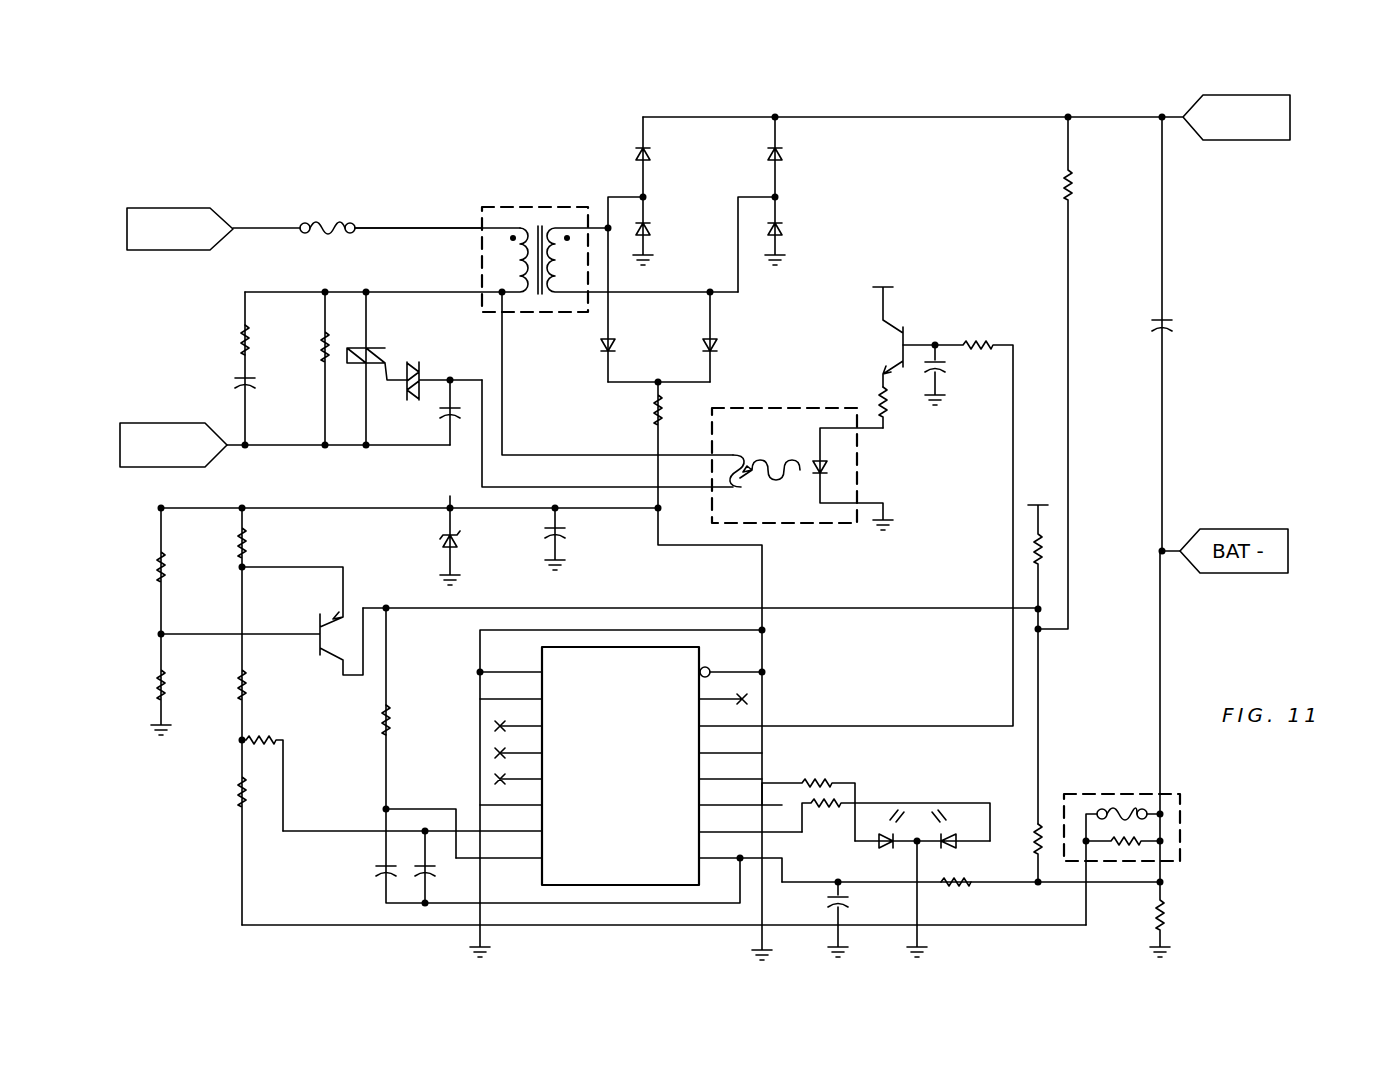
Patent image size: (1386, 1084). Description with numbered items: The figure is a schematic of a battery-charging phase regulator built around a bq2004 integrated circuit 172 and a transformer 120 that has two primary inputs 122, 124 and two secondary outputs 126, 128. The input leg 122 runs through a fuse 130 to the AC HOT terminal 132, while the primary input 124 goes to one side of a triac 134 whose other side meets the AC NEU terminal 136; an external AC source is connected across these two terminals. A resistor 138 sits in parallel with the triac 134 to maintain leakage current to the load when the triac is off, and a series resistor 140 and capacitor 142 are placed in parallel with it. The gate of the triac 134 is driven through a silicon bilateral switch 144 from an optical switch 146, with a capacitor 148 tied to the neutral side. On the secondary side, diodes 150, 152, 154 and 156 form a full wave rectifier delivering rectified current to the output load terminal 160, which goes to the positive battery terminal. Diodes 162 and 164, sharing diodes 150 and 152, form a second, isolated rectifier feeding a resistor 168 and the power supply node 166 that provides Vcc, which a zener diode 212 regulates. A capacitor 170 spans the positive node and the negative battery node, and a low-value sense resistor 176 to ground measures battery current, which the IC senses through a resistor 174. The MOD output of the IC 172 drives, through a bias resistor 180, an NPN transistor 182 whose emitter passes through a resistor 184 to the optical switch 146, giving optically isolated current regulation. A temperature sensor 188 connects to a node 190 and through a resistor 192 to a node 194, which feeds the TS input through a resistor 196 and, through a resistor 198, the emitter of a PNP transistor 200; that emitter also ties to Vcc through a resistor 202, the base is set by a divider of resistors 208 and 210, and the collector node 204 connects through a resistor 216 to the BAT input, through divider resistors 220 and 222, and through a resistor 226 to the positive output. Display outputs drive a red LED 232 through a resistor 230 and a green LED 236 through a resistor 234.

The transformer 120 is at (526, 208).
The primary input 122 is at (436, 224).
The primary input 124 is at (436, 290).
The secondary output 126 is at (613, 194).
The secondary output 128 is at (652, 296).
The fuse 130 is at (324, 224).
The AC terminal 132 is at (162, 250).
The triac 134 is at (368, 348).
The AC neutral terminal 136 is at (146, 420).
The resistor 138 is at (318, 353).
The resistor 140 is at (240, 336).
The capacitor 142 is at (240, 382).
The silicon bilateral switch 144 is at (422, 372).
The optical switch 146 is at (786, 442).
The capacitor 148 is at (440, 416).
The diode 150 is at (652, 224).
The diode 152 is at (784, 224).
The diode 154 is at (652, 152).
The diode 156 is at (784, 152).
The output load terminal 160 is at (1070, 120).
The diode 162 is at (600, 347).
The diode 164 is at (718, 347).
The power supply node 166 is at (654, 509).
The resistor / node 168 is at (654, 415).
The capacitor 170 is at (1174, 323).
The integrated circuit 172 is at (640, 856).
The resistor 174 is at (950, 882).
The sense resistor 176 is at (1166, 916).
The bias resistor 180 is at (976, 350).
The NPN transistor 182 is at (906, 332).
The resistor 184 is at (878, 396).
The temperature sensor 188 is at (1184, 840).
The node 190 is at (308, 924).
The resistor 192 is at (236, 793).
The node 194 is at (242, 744).
The resistor 196 is at (258, 736).
The resistor 198 is at (246, 677).
The PNP transistor 200 is at (318, 622).
The resistor 202 is at (246, 537).
The node 204 is at (386, 608).
The resistor 208 is at (154, 683).
The resistor 210 is at (154, 566).
The zener diode 212 is at (454, 539).
The resistor 216 is at (378, 718).
The resistor 220 is at (1030, 828).
The resistor 222 is at (1032, 548).
The resistor 226 is at (1064, 185).
The resistor 230 is at (824, 780).
The red LED 232 is at (922, 864).
The resistor 234 is at (822, 808).
The LED 236 is at (971, 868).